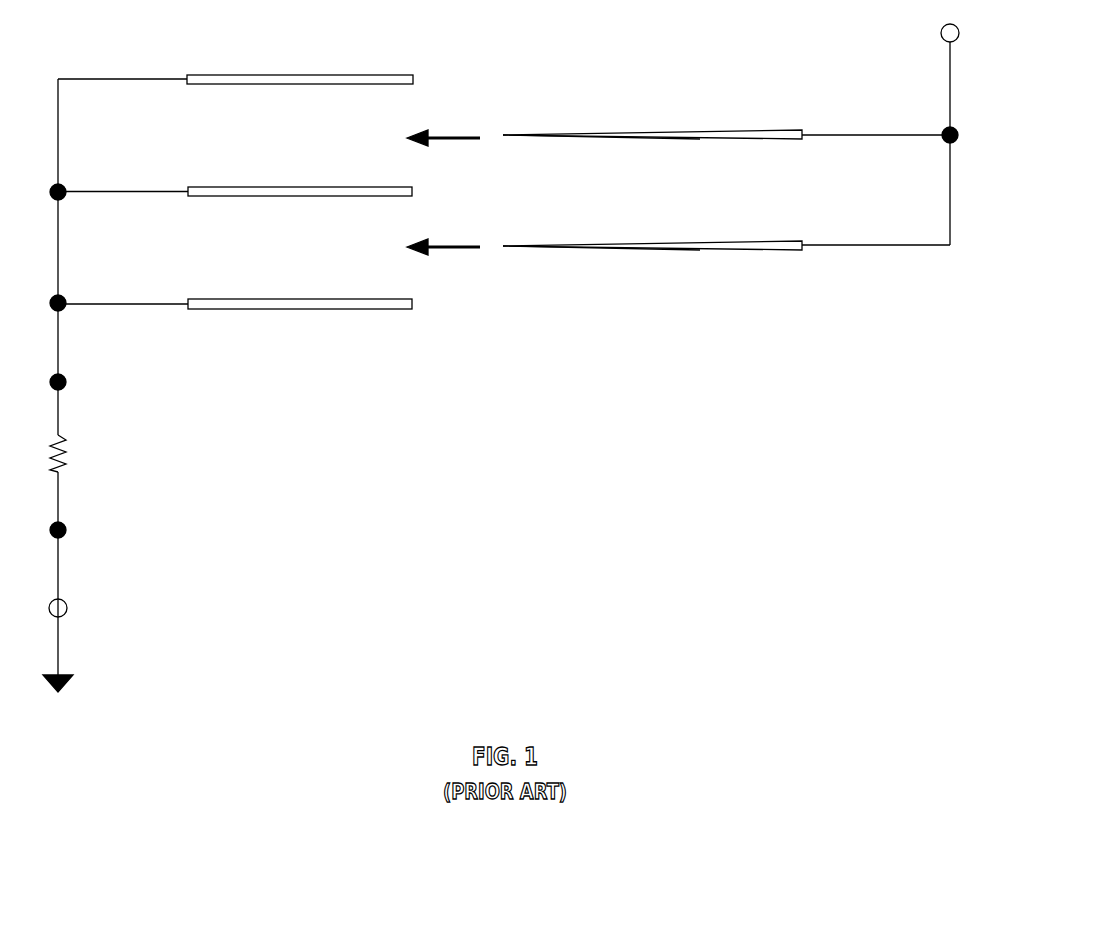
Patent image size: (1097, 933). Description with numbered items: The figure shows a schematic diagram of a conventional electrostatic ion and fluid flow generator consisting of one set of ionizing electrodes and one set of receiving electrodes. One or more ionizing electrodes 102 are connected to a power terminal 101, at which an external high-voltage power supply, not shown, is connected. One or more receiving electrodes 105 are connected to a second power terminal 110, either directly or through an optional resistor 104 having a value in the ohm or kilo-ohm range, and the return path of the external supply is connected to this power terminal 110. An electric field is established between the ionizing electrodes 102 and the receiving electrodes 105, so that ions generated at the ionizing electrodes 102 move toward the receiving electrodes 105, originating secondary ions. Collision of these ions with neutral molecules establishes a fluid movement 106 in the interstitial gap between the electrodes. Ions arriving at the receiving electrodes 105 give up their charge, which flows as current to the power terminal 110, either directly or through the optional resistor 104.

The power terminal 101 is at (940, 33).
The ionizing electrodes 102 is at (720, 139).
The optional resistor 104 is at (65, 466).
The receiving electrodes 105 is at (285, 85).
The fluid movement 106 is at (438, 143).
The power terminal 110 is at (67, 599).